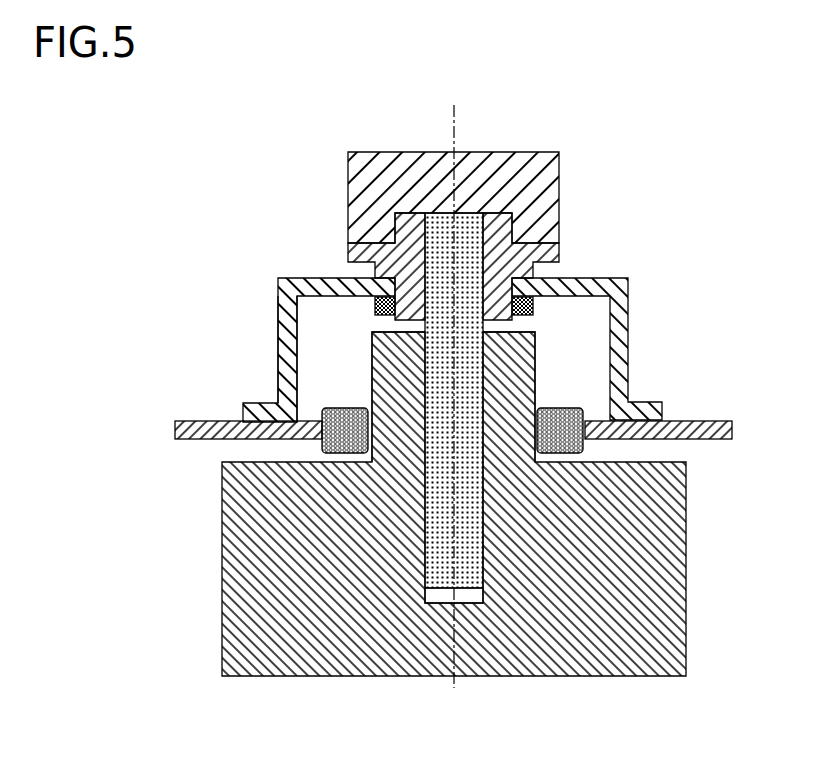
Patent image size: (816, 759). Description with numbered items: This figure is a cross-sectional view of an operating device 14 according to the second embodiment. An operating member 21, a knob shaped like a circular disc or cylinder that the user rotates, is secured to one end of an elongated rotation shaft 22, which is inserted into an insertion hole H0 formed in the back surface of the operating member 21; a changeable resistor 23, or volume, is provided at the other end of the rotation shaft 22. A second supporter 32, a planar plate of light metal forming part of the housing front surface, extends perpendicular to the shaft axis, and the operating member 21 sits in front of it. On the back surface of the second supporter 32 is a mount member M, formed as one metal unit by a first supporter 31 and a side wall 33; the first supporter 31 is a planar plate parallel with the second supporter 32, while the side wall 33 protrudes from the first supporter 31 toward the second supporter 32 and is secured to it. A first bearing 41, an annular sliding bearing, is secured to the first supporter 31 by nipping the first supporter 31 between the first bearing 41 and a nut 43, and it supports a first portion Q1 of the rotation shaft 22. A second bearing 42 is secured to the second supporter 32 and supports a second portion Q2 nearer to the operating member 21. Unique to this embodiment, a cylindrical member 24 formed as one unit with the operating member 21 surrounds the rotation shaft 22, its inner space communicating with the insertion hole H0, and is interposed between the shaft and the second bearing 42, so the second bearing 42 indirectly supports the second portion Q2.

The operating device 14 is at (312, 178).
The operating member 21 is at (222, 580).
The rotation shaft 22 is at (463, 213).
The changeable resistor 23 is at (560, 187).
The cylindrical member 24 is at (505, 373).
The first supporter 31 is at (292, 280).
The second supporter 32 is at (175, 425).
The side wall 33 is at (285, 365).
The first bearing 41 is at (348, 247).
The second bearing 42 is at (343, 408).
The nut 43 is at (377, 309).
The mount member M is at (249, 342).
The first portion Q1 is at (535, 268).
The second portion Q2 is at (460, 423).
The insertion hole H0 is at (438, 598).